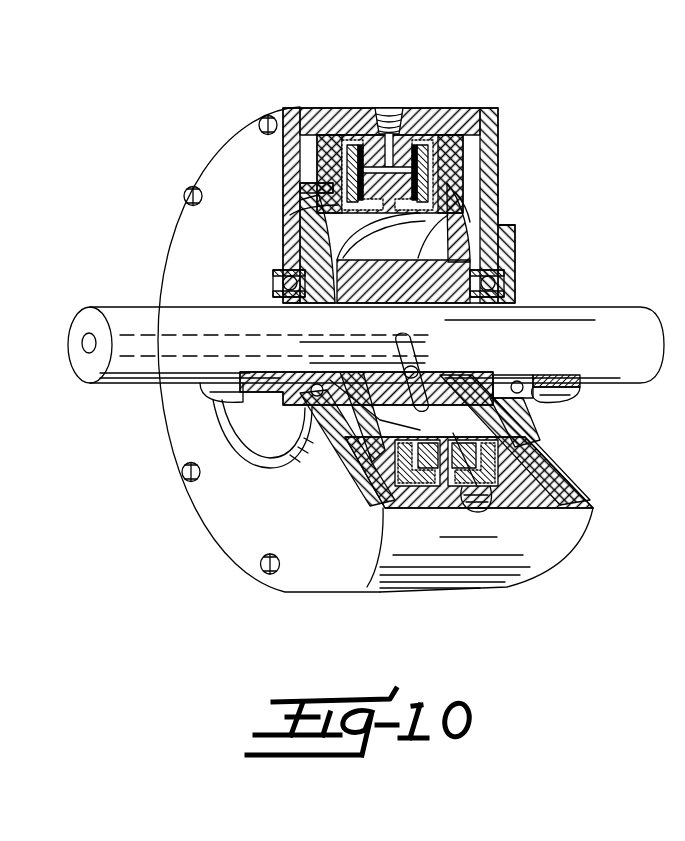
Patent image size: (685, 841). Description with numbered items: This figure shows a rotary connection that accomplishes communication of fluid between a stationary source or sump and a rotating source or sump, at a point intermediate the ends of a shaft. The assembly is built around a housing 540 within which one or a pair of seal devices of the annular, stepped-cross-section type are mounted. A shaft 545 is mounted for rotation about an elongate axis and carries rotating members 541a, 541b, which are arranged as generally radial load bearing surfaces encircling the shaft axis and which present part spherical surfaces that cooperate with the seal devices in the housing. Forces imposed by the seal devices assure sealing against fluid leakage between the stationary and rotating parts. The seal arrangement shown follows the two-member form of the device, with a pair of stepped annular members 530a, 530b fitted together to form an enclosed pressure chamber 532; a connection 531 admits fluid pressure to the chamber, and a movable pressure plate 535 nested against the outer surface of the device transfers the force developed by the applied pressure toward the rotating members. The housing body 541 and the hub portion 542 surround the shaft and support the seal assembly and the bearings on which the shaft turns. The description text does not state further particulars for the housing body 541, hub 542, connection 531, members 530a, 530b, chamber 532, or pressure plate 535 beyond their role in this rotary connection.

The housing 540 is at (352, 604).
The housing 541 is at (450, 110).
The rotating member 541a is at (300, 200).
The rotating member 541b is at (591, 211).
The rotor hub 542 is at (290, 215).
The shaft 545 is at (654, 292).
The seal cavity block 531 is at (420, 112).
The seal element 530a is at (340, 142).
The adjusting bolt 530b is at (390, 116).
The seal housing 532 is at (348, 125).
The seal ring 535 is at (345, 183).